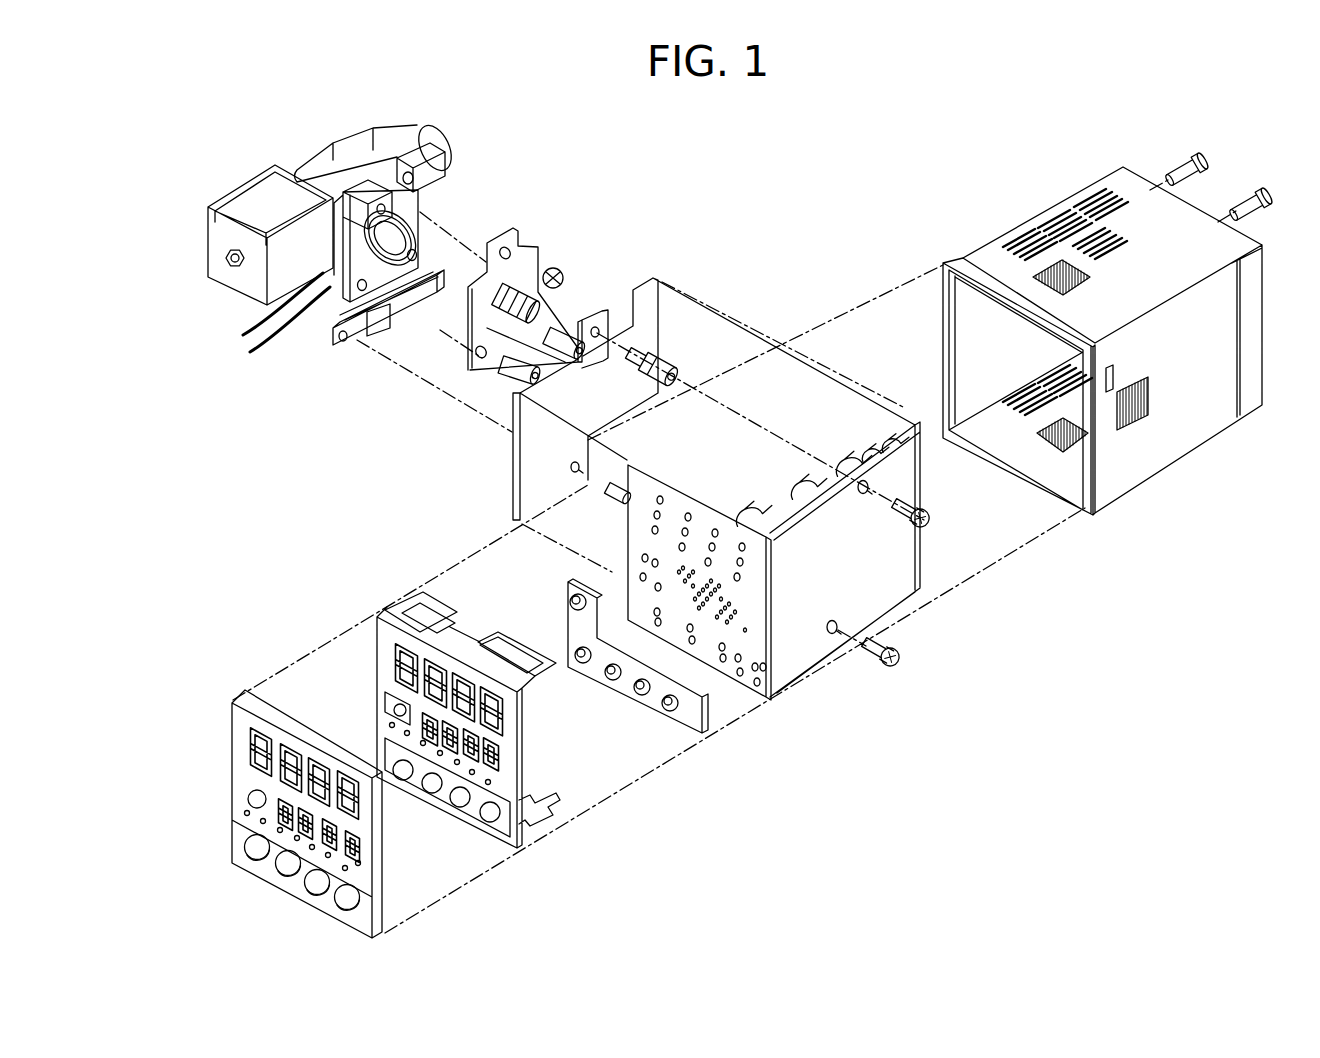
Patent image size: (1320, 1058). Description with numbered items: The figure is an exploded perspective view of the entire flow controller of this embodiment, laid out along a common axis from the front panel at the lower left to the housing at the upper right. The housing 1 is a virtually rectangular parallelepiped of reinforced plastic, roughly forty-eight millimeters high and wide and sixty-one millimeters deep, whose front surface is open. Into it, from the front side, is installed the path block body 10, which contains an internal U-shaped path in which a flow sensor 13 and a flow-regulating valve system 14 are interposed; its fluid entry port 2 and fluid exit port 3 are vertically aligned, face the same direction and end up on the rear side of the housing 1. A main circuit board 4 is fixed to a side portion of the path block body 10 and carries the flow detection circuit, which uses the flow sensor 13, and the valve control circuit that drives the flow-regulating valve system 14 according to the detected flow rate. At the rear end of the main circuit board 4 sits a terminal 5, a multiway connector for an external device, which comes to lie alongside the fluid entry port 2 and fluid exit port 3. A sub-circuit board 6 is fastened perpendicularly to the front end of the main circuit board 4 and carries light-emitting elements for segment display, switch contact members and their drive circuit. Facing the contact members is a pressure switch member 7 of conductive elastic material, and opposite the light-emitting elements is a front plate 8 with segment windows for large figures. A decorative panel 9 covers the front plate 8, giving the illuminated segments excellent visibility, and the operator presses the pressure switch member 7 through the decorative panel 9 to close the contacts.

The housing 1 is at (1007, 228).
The fluid entry port 2 is at (417, 205).
The fluid exit port 3 is at (437, 143).
The main circuit board 4 is at (882, 587).
The terminal 5 is at (913, 421).
The sub-circuit board 6 is at (767, 667).
The pressure switch member 7 is at (687, 720).
The front plate 8 is at (507, 783).
The decorative panel 9 is at (240, 770).
The path block body 10 is at (312, 284).
The flow sensor 13 is at (557, 250).
The flow-regulating valve system 14 is at (213, 292).